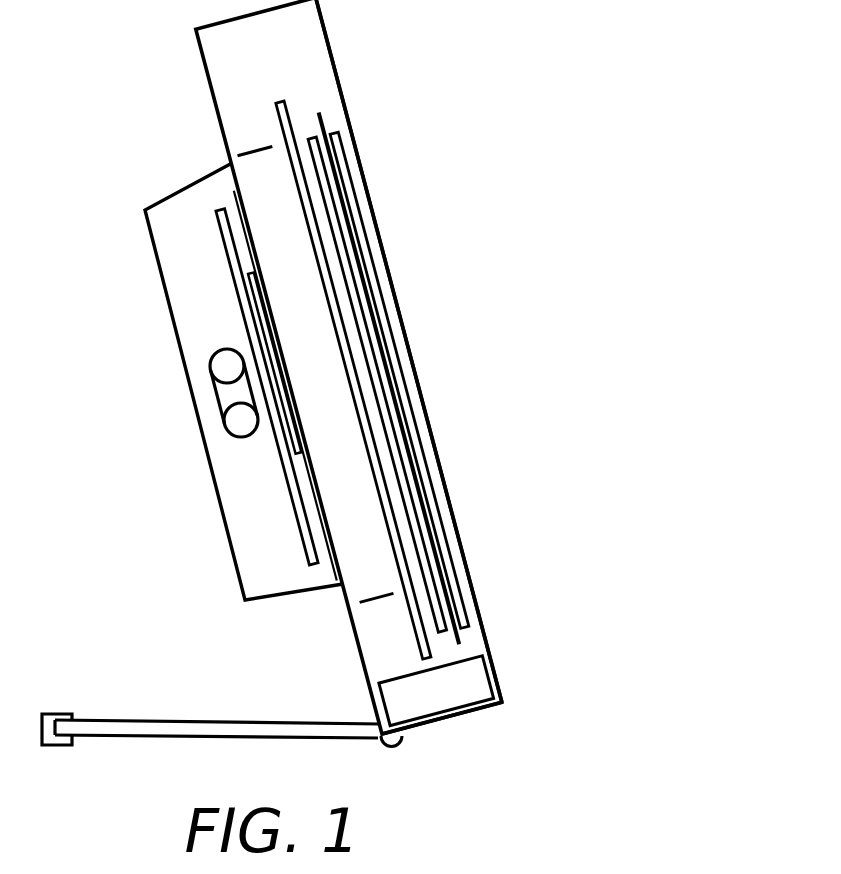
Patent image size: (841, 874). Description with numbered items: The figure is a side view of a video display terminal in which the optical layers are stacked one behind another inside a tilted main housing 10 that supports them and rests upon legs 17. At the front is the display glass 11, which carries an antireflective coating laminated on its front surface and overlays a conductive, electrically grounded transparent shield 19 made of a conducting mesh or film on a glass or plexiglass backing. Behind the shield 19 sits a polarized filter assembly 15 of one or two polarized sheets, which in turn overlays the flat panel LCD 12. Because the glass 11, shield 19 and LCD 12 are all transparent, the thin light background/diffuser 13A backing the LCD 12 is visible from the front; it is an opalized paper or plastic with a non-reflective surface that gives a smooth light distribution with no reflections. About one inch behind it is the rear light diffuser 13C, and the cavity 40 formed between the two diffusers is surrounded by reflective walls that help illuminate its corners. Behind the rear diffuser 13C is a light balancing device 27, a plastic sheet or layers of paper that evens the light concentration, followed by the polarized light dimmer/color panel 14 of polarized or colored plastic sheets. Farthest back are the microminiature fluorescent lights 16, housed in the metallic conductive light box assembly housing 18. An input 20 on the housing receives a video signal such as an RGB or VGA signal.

The main housing 10 is at (349, 367).
The display glass 11 is at (409, 351).
The LCD 12 is at (377, 384).
The light background/diffuser 13A is at (353, 380).
The rear light diffuser 13C is at (285, 386).
The polarized light dimmer/color panel 14 is at (267, 387).
The polarized filter assembly 15 is at (389, 379).
The fluorescent lights 16 is at (210, 365).
The legs 17 is at (163, 737).
The light box assembly housing 18 is at (222, 512).
The transparent shield 19 is at (399, 380).
The input 20 is at (442, 718).
The light balancing device 27 is at (274, 362).
The cavity 40 is at (315, 375).